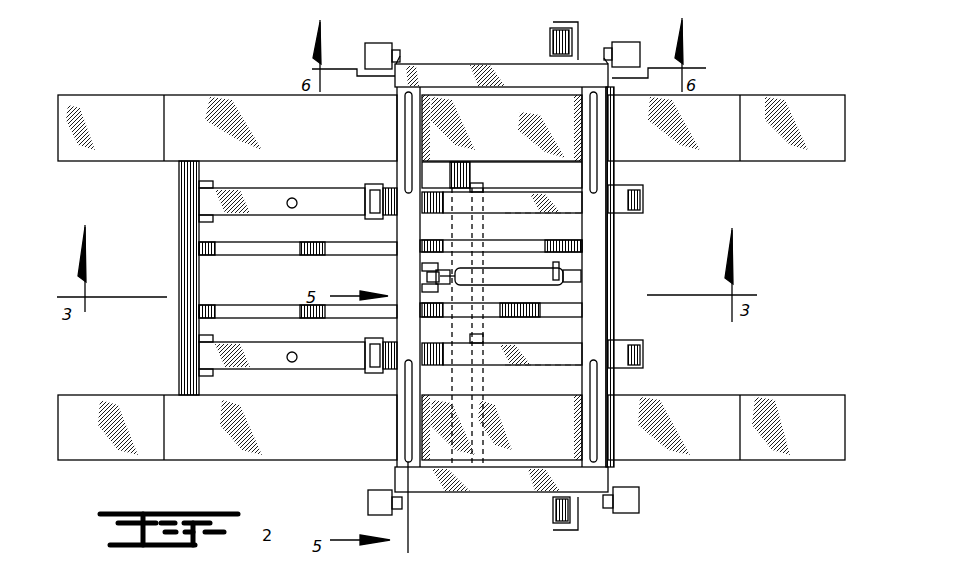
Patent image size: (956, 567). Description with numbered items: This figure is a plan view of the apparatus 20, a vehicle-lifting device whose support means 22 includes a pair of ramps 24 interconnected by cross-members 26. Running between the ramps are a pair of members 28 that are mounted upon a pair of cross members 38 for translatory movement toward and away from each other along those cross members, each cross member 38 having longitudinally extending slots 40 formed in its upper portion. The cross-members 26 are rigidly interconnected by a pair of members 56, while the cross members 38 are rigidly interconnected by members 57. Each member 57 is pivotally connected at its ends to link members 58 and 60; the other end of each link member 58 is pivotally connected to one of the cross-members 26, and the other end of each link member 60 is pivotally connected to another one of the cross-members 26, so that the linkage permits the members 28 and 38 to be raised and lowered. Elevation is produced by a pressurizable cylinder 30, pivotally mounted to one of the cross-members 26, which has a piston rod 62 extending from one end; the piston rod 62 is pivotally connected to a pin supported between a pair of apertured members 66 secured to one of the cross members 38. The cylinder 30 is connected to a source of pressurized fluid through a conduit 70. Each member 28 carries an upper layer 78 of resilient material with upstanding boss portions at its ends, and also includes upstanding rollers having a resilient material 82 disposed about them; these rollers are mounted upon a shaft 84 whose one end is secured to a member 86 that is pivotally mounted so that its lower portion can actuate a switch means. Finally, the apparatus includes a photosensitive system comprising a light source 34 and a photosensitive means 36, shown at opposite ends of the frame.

The apparatus 20 is at (733, 75).
The support means 22 is at (170, 172).
The ramps 24 is at (302, 131).
The cross-members 26 is at (179, 252).
The members 28 is at (452, 62).
The pressurizable cylinder 30 is at (505, 265).
The light source 34 is at (550, 42).
The photosensitive means 36 is at (553, 526).
The cross members 38 is at (397, 176).
The slots 40 is at (405, 116).
The members 56 is at (268, 255).
The members 57 is at (540, 212).
The link members 58 is at (302, 190).
The link members 60 is at (562, 190).
The piston rod 62 is at (446, 285).
The apertured members 66 is at (422, 266).
The conduit 70 is at (552, 266).
The layer of resilient material 78 is at (478, 87).
The resilient material 82 is at (372, 45).
The shaft 84 is at (397, 50).
The member 86 is at (400, 54).